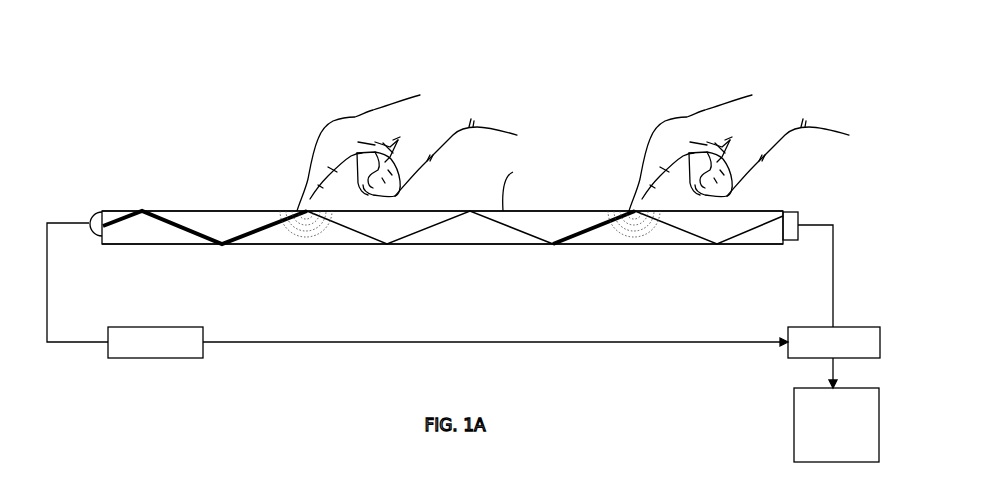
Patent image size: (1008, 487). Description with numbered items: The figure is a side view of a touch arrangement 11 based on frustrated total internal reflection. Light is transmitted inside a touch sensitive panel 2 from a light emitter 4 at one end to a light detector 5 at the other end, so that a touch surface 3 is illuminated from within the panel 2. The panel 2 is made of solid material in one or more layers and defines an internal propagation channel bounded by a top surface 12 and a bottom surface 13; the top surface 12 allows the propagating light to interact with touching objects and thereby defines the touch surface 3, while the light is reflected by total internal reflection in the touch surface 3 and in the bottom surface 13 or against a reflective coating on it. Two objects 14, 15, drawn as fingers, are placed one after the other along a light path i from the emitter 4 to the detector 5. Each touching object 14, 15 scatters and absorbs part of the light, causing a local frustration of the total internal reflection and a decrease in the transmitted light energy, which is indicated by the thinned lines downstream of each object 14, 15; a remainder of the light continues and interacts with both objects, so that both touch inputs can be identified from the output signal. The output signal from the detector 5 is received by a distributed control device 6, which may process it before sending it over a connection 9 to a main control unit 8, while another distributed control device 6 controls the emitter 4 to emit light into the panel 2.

The touch arrangement 11 is at (125, 138).
The touch sensitive panel 2 is at (237, 217).
The touch surface 3 is at (172, 210).
The top surface 12 is at (220, 210).
The bottom surface 13 is at (122, 247).
The light emitter 4 is at (87, 220).
The light detector 5 is at (790, 223).
The light path i is at (514, 187).
The touching object 14 is at (343, 147).
The touching object 15 is at (667, 153).
The distributed control device 6 is at (146, 352).
The signal connection 9 is at (800, 347).
The main control unit 8 is at (827, 431).